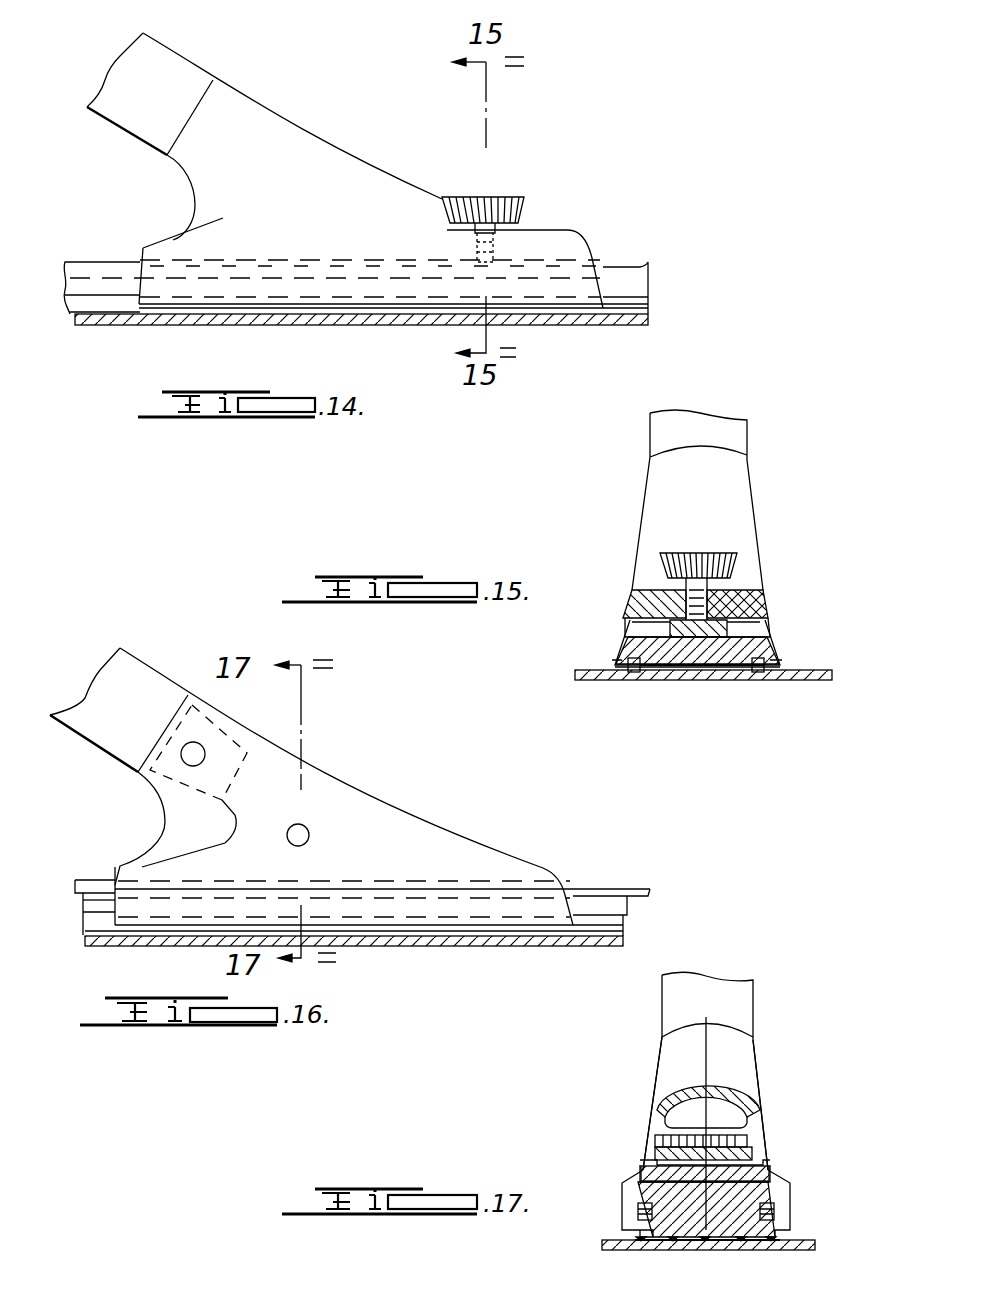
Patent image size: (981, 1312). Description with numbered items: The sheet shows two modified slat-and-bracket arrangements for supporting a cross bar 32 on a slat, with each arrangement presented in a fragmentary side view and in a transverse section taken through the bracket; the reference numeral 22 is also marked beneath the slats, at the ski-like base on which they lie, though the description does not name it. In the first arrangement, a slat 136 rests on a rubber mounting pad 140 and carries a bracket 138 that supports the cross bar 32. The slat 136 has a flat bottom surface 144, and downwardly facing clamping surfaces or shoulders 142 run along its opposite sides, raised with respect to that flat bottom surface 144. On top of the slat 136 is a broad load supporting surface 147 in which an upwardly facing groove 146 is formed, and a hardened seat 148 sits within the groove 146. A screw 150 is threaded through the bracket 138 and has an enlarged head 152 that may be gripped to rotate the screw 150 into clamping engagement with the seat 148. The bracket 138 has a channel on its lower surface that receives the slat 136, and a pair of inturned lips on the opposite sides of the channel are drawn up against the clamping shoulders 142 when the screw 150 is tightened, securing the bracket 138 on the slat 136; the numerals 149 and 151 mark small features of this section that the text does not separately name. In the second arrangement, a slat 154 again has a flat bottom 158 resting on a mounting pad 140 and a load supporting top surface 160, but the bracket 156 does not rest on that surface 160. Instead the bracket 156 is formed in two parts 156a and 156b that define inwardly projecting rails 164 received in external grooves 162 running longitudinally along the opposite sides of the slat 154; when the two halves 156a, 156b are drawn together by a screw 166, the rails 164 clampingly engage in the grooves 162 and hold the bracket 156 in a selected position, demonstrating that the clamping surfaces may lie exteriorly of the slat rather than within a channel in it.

In FIG. 14, the ski 22 is at (632, 326).
In FIG. 15, the ski 22 is at (808, 682).
In FIG. 16, the ski 22 is at (515, 948).
In FIG. 17, the ski 22 is at (615, 1251).
In FIG. 14, the cross bar 32 is at (183, 70).
In FIG. 15, the cross bar 32 is at (748, 430).
In FIG. 16, the cross bar 32 is at (123, 666).
In FIG. 17, the cross bar 32 is at (746, 1000).
In FIG. 14, the slat 136 is at (616, 265).
In FIG. 15, the slat 136 is at (766, 650).
In FIG. 14, the bracket 138 is at (318, 158).
In FIG. 15, the rubber mounting pad 140 is at (730, 676).
In FIG. 17, the rubber mounting pad 140 is at (772, 1250).
In FIG. 14, the clamping shoulders 142 is at (90, 296).
In FIG. 15, the clamping shoulders 142 is at (634, 674).
In FIG. 15, the flat bottom surface 144 is at (666, 682).
In FIG. 15, the groove 146 is at (756, 592).
In FIG. 15, the load supporting surface 147 is at (772, 604).
In FIG. 15, the hardened seat 148 is at (662, 632).
In FIG. 15, the recess 149 is at (666, 628).
In FIG. 14, the screw 150 is at (520, 238).
In FIG. 15, the screw 150 is at (745, 592).
In FIG. 14, the groove 151 is at (188, 306).
In FIG. 15, the groove 151 is at (772, 672).
In FIG. 14, the enlarged head 152 is at (498, 196).
In FIG. 15, the enlarged head 152 is at (681, 548).
In FIG. 16, the slat 154 is at (590, 890).
In FIG. 17, the slat 154 is at (745, 1195).
In FIG. 16, the bracket 156 is at (390, 820).
In FIG. 17, the bracket half 156a is at (672, 1050).
In FIG. 17, the bracket half 156b is at (750, 1056).
In FIG. 16, the flat bottom 158 is at (620, 932).
In FIG. 17, the flat bottom 158 is at (735, 1252).
In FIG. 16, the load supporting top surface 160 is at (100, 878).
In FIG. 17, the load supporting top surface 160 is at (758, 1160).
In FIG. 16, the external grooves 162 is at (92, 900).
In FIG. 17, the external grooves 162 is at (638, 1210).
In FIG. 17, the inwardly projecting rails 164 is at (648, 1222).
In FIG. 16, the screw 166 is at (310, 836).
In FIG. 17, the screw 166 is at (650, 1143).